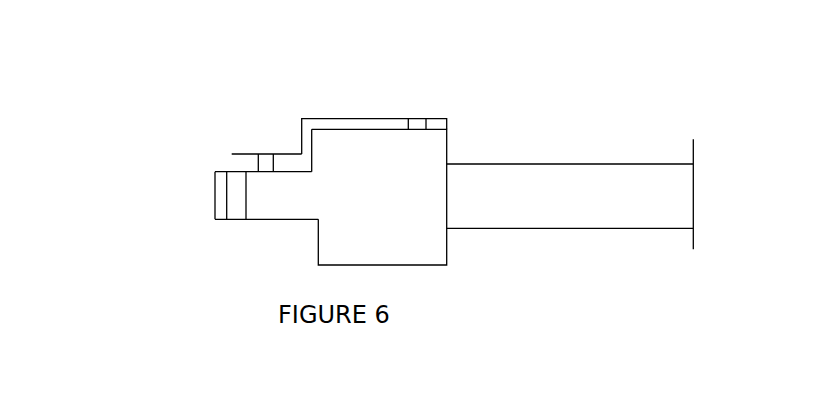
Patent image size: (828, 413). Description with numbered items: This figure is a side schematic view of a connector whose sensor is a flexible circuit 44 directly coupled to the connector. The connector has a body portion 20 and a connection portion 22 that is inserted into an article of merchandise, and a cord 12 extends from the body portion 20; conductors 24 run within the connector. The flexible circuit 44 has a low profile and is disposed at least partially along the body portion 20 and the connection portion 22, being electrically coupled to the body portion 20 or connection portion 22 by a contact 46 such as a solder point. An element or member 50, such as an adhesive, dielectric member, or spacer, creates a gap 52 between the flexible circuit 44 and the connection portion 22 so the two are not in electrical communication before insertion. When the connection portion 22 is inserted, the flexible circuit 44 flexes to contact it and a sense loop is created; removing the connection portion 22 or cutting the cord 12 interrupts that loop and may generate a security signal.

The cord 12 is at (558, 164).
The body portion 20 is at (447, 192).
The connection portion 22 is at (242, 218).
The conductors 24 is at (237, 192).
The flexible circuit 44 is at (345, 118).
The contact 46 is at (418, 122).
The element or member 50 is at (264, 153).
The gap 52 is at (237, 163).